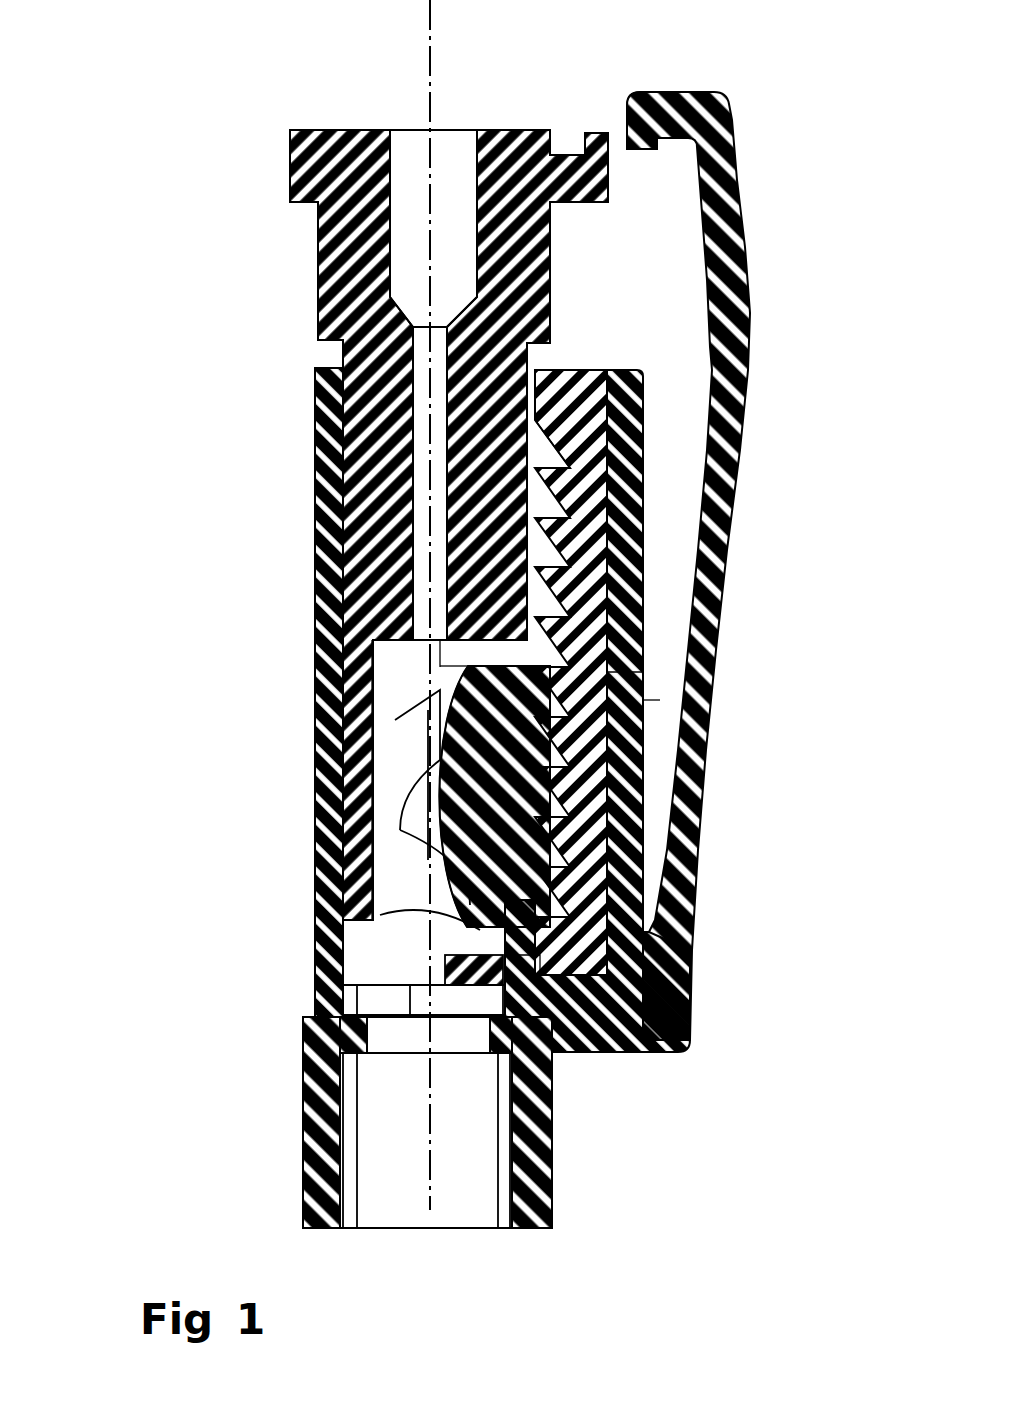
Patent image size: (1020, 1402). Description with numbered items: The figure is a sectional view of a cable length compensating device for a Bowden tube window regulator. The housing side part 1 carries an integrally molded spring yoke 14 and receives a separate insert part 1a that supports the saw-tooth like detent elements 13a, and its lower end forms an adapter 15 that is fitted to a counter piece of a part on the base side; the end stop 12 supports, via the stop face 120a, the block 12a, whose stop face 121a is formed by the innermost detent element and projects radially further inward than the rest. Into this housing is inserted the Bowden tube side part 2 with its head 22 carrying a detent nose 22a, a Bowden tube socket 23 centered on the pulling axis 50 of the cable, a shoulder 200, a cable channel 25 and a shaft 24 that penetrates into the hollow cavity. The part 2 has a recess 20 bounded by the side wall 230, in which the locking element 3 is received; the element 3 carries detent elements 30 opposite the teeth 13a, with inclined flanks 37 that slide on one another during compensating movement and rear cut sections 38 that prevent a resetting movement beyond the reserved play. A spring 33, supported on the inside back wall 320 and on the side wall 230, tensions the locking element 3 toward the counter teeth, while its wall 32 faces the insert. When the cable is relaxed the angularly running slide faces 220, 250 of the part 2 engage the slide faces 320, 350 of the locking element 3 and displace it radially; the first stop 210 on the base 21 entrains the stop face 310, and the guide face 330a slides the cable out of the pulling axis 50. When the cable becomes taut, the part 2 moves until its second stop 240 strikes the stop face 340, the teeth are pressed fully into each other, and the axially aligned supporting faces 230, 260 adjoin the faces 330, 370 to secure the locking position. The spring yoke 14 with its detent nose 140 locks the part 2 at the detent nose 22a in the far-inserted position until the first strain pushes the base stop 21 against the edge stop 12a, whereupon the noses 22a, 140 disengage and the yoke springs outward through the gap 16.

The housing side part 1 is at (300, 512).
The insert part 1a is at (600, 612).
The detent elements 13a is at (610, 566).
The spring yoke 14 is at (720, 455).
The detent nose 140 is at (640, 92).
The housing wall gap 16 is at (648, 703).
The end stop 12 is at (630, 1045).
The block 12a is at (570, 1058).
The stop face 120a is at (545, 1003).
The stop face 121a is at (570, 905).
The adapter 15 is at (548, 1160).
The Bowden tube side part 2 is at (305, 262).
The piston head 22 is at (290, 165).
The detent nose 22a is at (591, 135).
The Bowden tube socket 23 is at (421, 180).
The pulling axis 50 is at (436, 95).
The piston shoulder 200 is at (330, 362).
The rod channel 25 is at (425, 398).
The shaft 24 is at (375, 438).
The second stop 240 is at (460, 655).
The supporting face 260 is at (470, 693).
The slide face 250 is at (430, 740).
The recess 20 is at (385, 770).
The side wall 230 is at (440, 785).
The slide face 220 is at (420, 870).
The base 21 is at (450, 960).
The slide face 370 is at (350, 1000).
The locking element 3 is at (650, 738).
The detent elements 30 is at (540, 800).
The valve thread wall 32 is at (600, 860).
The spring 33 is at (505, 748).
The inclined flanks 37 is at (660, 672).
The rear cut section 38 is at (530, 628).
The stop face 340 is at (440, 662).
The slide face 350 is at (400, 735).
The slide face 330 is at (400, 810).
The slide face 320 is at (475, 835).
The guide face 330a is at (470, 905).
The stop face 310 is at (470, 930).
The first stop 210 is at (520, 965).